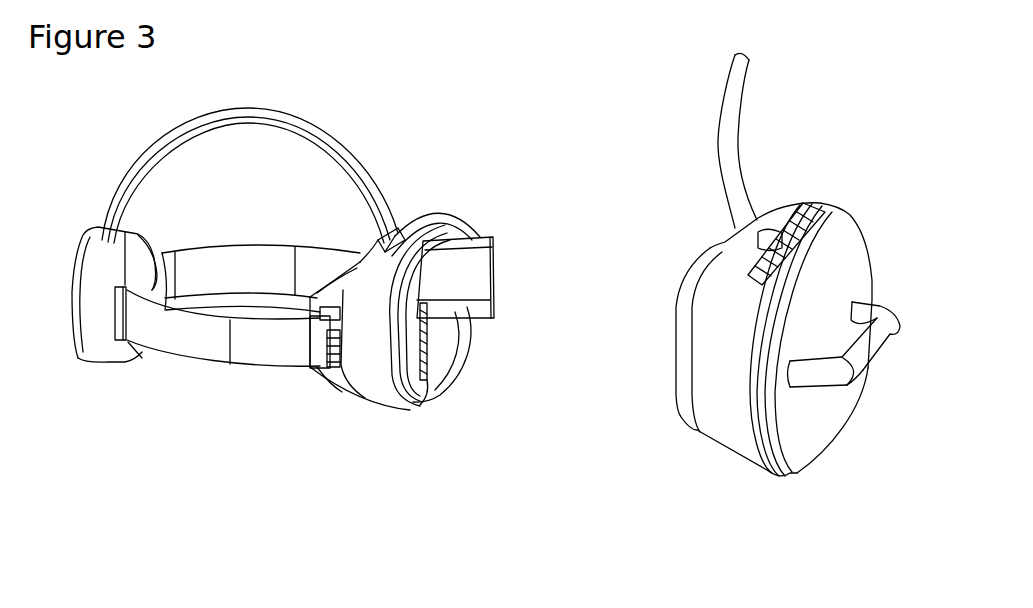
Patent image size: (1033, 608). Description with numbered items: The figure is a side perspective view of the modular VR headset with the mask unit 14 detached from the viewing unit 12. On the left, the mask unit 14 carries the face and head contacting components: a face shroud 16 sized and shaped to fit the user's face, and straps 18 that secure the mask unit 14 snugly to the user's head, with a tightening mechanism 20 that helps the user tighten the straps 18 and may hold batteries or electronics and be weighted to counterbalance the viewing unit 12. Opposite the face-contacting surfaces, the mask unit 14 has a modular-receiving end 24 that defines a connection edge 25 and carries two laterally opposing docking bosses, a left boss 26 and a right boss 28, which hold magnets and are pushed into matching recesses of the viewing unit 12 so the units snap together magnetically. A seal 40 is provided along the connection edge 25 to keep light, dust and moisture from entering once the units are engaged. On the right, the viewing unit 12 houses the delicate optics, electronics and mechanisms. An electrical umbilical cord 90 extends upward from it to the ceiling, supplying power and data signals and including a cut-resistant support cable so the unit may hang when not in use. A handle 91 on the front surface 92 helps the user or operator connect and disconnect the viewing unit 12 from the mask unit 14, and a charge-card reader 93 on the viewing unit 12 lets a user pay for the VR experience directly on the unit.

The viewing unit 12 is at (728, 432).
The mask unit 14 is at (143, 443).
The face shroud 16 is at (372, 388).
The straps 18 is at (300, 108).
The tightening mechanism 20 is at (102, 348).
The modular-receiving end 24 is at (453, 220).
The connection edge 25 is at (457, 372).
The left boss 26 is at (468, 255).
The right boss 28 is at (423, 402).
The seal 40 is at (710, 248).
The electrical umbilical cord 90 is at (725, 133).
The handle 91 is at (870, 343).
The front surface 92 is at (812, 433).
The charge-card reader 93 is at (813, 203).